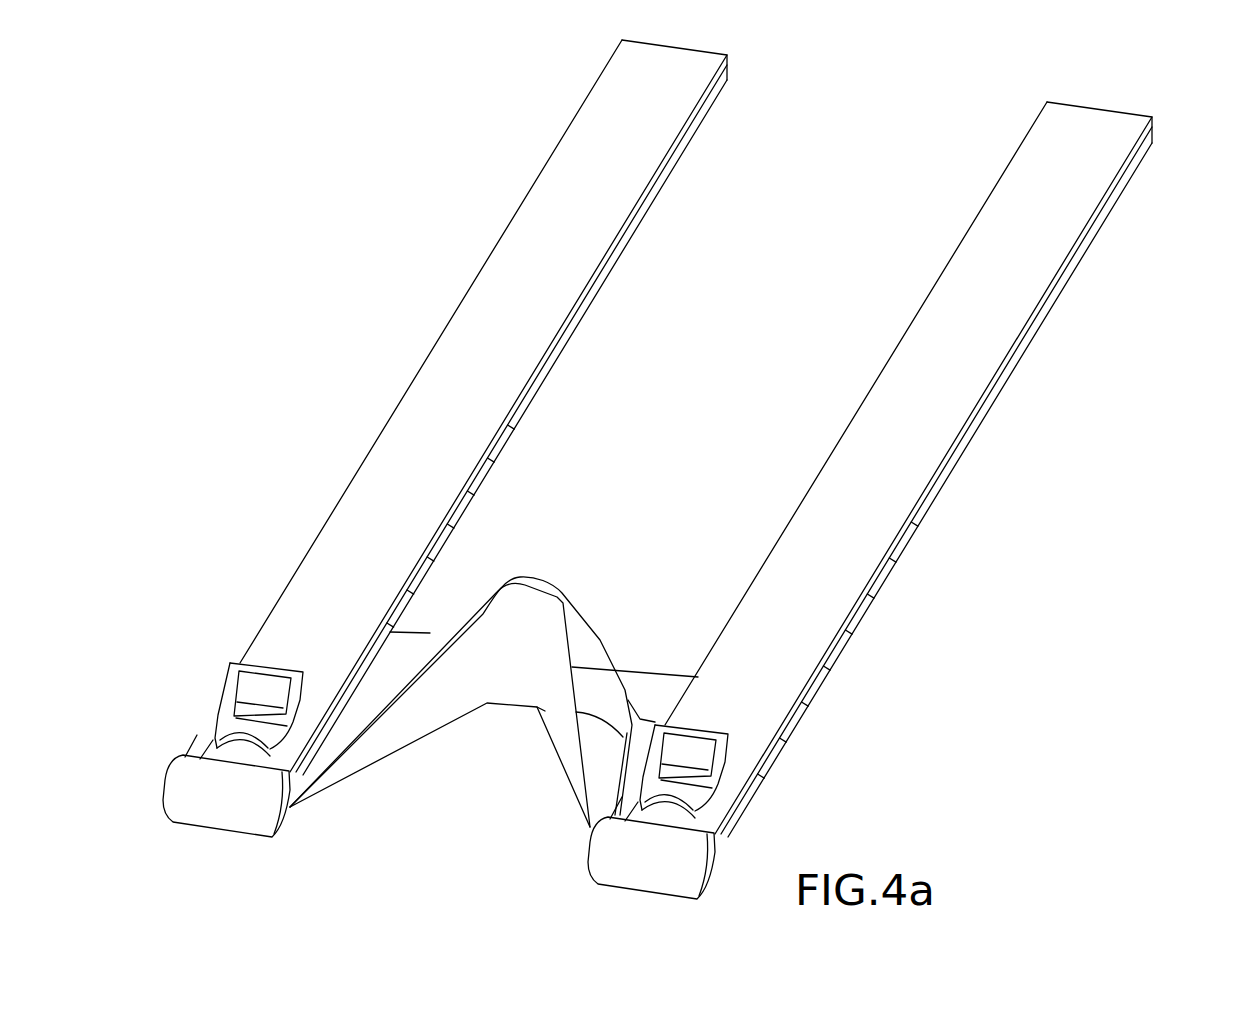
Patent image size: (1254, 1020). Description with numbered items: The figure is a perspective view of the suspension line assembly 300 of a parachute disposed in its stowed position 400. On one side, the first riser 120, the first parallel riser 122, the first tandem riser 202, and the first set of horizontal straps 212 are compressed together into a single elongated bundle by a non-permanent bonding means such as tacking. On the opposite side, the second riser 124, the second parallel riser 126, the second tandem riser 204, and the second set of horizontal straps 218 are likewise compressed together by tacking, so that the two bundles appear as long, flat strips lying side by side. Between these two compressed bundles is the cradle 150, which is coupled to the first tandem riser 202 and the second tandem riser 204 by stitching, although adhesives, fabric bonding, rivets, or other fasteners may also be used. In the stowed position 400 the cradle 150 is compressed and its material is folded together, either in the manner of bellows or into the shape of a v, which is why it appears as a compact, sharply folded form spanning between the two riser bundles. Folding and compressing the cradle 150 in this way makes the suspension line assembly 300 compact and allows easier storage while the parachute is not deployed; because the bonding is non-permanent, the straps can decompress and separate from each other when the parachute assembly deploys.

The stowed position 400 is at (700, 469).
The suspension line assembly 300 is at (913, 500).
The first riser 120 is at (637, 182).
The first parallel riser 122 is at (573, 317).
The first tandem riser 202 is at (603, 278).
The first set of horizontal straps 212 is at (478, 508).
The cradle 150 is at (595, 665).
The second riser 124 is at (908, 465).
The second parallel riser 126 is at (1033, 322).
The second tandem riser 204 is at (992, 400).
The second set of horizontal straps 218 is at (858, 642).